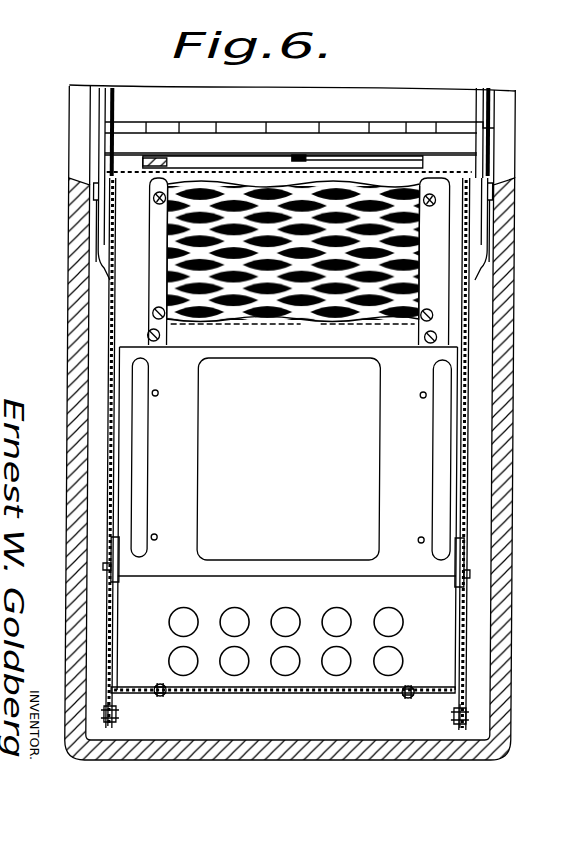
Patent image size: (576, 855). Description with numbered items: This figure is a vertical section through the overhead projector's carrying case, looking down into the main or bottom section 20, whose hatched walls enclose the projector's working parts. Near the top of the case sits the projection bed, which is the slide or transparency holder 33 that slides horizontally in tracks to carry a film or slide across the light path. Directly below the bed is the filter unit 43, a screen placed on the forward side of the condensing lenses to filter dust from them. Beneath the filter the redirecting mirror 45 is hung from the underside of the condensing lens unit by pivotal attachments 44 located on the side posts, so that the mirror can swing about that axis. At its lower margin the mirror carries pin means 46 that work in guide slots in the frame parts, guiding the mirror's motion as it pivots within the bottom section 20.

The main or bottom section 20 is at (68, 373).
The slide or transparency holder 33 is at (358, 162).
The filter unit 43 is at (300, 316).
The pivotal attachment 44 is at (146, 334).
The redirecting mirror 45 is at (342, 478).
The pin means 46 is at (108, 567).